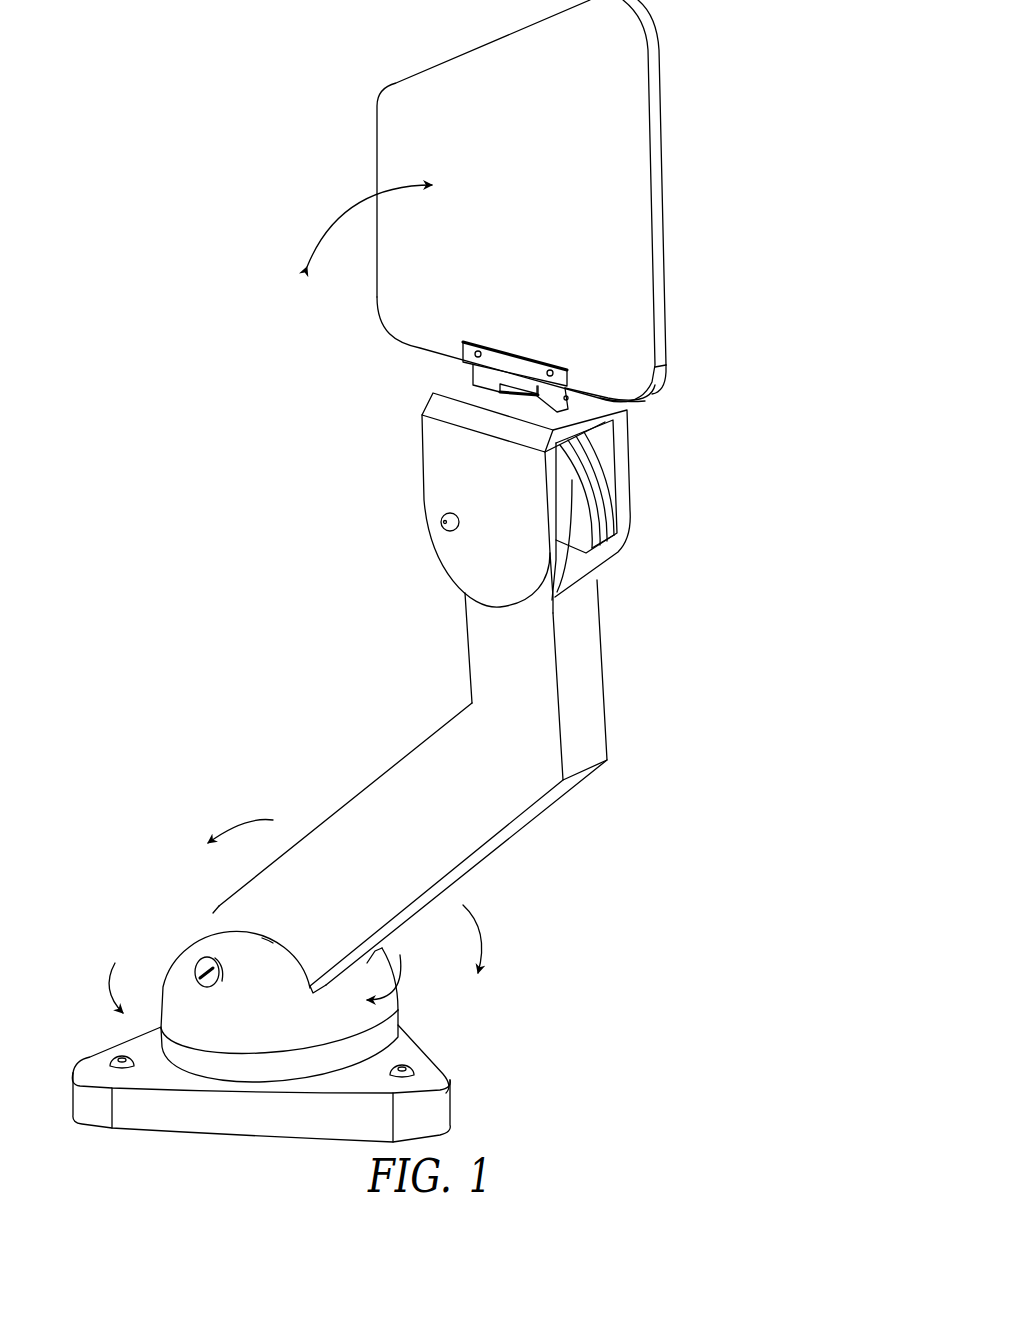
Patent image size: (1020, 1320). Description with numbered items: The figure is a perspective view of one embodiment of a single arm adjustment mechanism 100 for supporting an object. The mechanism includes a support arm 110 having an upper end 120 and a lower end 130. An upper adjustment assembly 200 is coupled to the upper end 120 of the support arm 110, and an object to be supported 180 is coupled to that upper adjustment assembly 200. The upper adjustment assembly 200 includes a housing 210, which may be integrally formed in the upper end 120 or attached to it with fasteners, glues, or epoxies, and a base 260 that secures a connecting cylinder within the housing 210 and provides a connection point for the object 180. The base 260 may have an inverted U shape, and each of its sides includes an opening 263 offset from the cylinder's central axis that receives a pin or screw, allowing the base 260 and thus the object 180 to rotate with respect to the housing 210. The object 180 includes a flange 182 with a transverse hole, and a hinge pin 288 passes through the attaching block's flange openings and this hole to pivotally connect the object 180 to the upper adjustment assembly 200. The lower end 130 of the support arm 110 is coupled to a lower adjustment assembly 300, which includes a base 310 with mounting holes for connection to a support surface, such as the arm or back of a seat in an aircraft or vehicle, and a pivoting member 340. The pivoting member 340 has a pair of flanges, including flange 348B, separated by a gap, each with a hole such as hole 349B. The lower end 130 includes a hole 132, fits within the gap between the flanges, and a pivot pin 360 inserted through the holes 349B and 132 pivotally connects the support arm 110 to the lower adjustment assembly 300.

The single arm adjustment mechanism 100 is at (569, 1004).
The support arm 110 is at (490, 841).
The upper end 120 is at (606, 698).
The lower end 130 is at (219, 906).
The hole 132 is at (221, 975).
The object to be supported 180 is at (660, 274).
The flange 182 is at (520, 365).
The upper adjustment assembly 200 is at (598, 570).
The housing 210 is at (608, 538).
The base 260 is at (422, 472).
The opening 263 is at (441, 522).
The hinge pin 288 is at (645, 398).
The lower adjustment assembly 300 is at (253, 1058).
The base 310 is at (457, 1100).
The pivoting member 340 is at (176, 990).
The flange 348B is at (287, 929).
The hole 349B is at (238, 955).
The pivot pin 360 is at (207, 987).